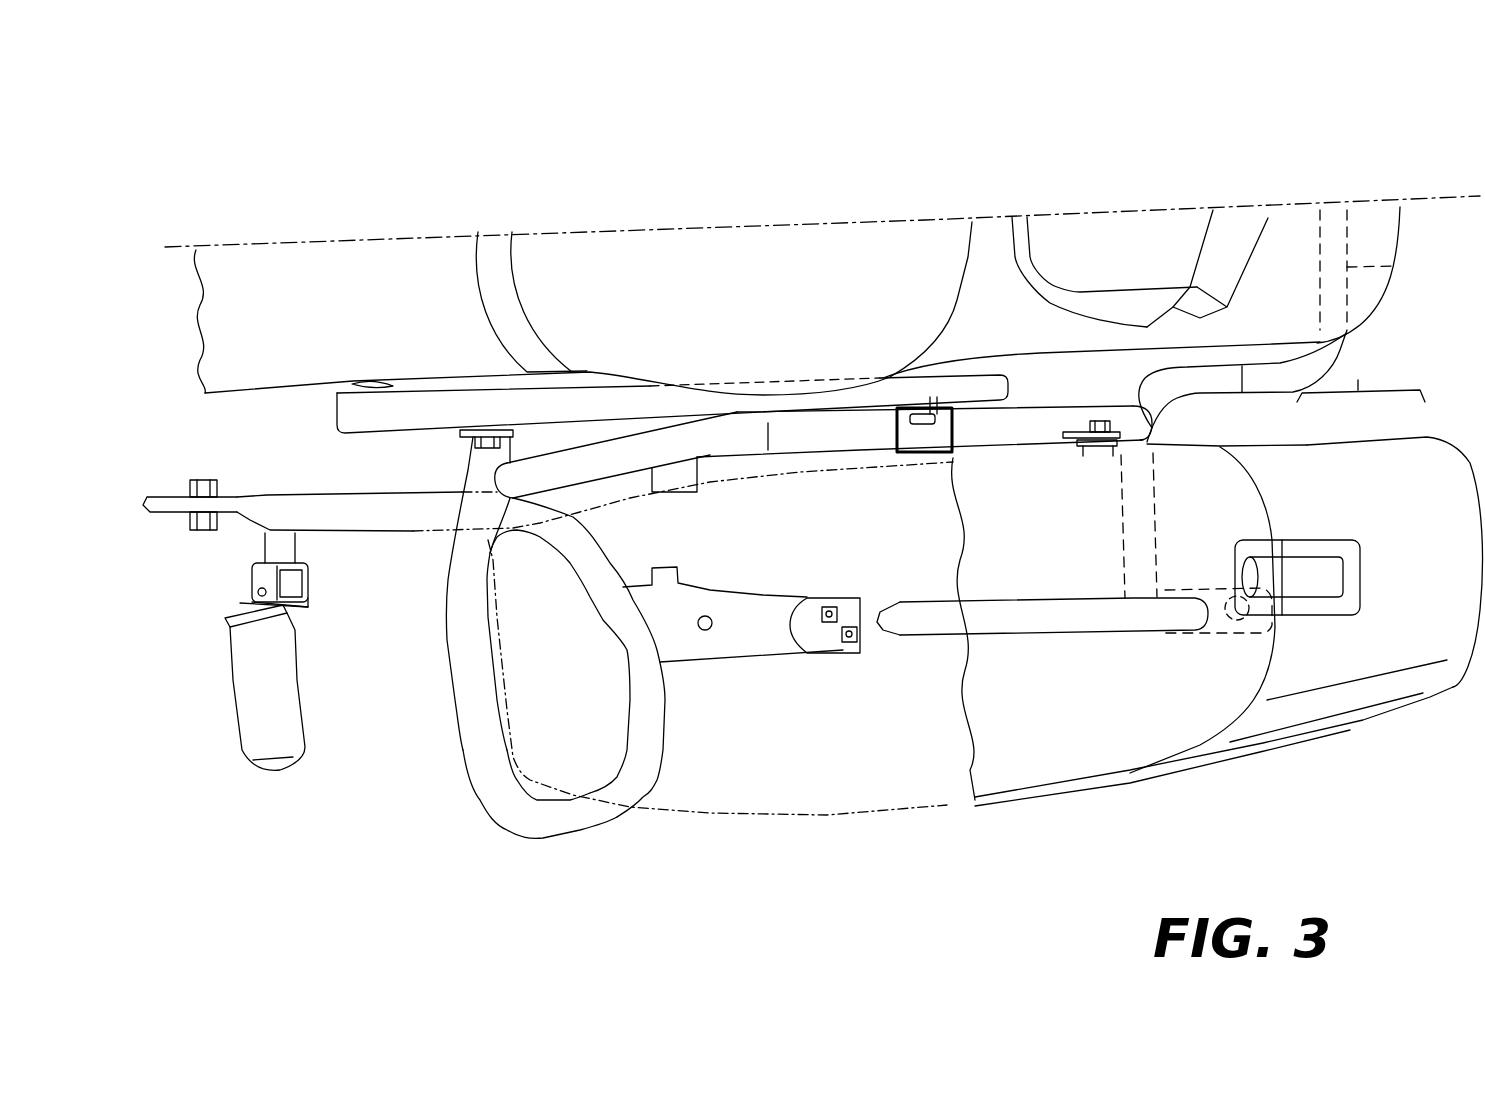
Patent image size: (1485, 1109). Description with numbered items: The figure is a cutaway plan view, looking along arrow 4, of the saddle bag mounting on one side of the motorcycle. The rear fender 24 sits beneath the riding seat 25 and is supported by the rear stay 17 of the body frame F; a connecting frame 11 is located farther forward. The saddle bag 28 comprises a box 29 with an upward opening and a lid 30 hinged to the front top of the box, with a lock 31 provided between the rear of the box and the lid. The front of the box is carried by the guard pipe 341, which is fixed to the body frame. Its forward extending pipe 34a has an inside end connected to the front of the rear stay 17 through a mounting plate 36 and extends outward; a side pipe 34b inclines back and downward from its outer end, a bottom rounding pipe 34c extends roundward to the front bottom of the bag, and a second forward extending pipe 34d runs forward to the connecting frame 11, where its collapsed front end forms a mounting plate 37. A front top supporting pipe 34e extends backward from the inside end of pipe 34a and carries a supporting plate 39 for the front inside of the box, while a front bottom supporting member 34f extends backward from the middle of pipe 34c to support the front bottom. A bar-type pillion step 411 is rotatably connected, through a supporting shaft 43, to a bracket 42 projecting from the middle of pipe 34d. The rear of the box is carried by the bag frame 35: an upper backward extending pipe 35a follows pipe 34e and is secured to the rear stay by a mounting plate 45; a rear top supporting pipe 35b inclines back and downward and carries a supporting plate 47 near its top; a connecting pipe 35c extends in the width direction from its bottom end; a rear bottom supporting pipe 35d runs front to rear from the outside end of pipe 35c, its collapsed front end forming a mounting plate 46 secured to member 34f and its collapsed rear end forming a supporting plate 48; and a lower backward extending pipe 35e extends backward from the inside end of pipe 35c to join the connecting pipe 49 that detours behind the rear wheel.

The vehicle body cover 4 is at (940, 832).
The connecting frame 11 is at (163, 503).
The rear stay 17 is at (672, 388).
The rear fender 24 is at (1293, 222).
The riding seat 25 is at (442, 302).
The saddle bag 28 is at (1306, 563).
The box 29 is at (1397, 447).
The lid 30 is at (1250, 487).
The lock 31 is at (1322, 562).
The guard pipe 341 is at (595, 652).
The forward extending pipe 34a is at (450, 656).
The side pipe 34b is at (603, 825).
The bottom rounding pipe 34c is at (655, 750).
The forward extending pipe 34d is at (358, 522).
The front top supporting pipe 34e is at (620, 463).
The front bottom supporting member 34f is at (740, 645).
The bag frame 35 is at (1022, 503).
The upper backward extending pipe 35a is at (850, 440).
The rear top supporting pipe 35b is at (1072, 418).
The connecting pipe 35c is at (1125, 517).
The rear bottom supporting pipe 35d is at (933, 607).
The lower backward extending pipe 35e is at (1213, 372).
The mounting plate 36 is at (493, 432).
The mounting plate 37 is at (177, 520).
The supporting plate 39 is at (697, 470).
The pillion step 411 is at (243, 710).
The bracket 42 is at (258, 575).
The supporting shaft 43 is at (257, 593).
The mounting plate 45 is at (943, 423).
The mounting plate 46 is at (875, 645).
The supporting plate 47 is at (1093, 440).
The supporting plate 48 is at (1247, 637).
The connecting pipe 49 is at (1397, 266).
The body frame F is at (386, 378).